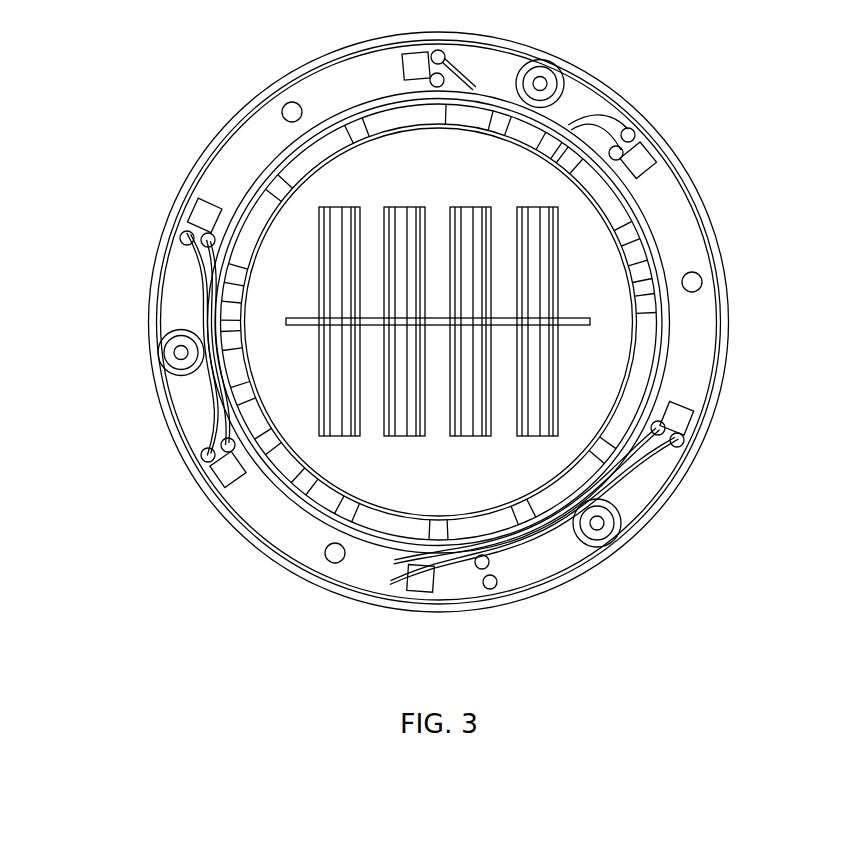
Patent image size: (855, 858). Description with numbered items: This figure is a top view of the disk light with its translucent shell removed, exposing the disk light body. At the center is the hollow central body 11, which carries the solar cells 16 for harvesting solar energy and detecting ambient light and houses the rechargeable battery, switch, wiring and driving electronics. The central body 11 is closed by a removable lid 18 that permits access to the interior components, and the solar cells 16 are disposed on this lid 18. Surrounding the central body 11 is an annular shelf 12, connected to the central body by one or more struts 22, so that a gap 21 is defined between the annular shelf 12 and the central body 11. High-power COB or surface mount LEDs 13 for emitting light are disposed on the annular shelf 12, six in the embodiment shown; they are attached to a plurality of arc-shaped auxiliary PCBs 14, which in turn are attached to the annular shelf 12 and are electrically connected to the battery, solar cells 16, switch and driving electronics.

The hollow central body 11 is at (290, 464).
The annular shelf 12 is at (160, 370).
The LEDs 13 is at (401, 57).
The arc-shaped auxiliary PCBs 14 is at (258, 120).
The solar cells 16 is at (466, 242).
The lid 18 is at (604, 283).
The gap 21 is at (233, 328).
The struts 22 is at (222, 410).